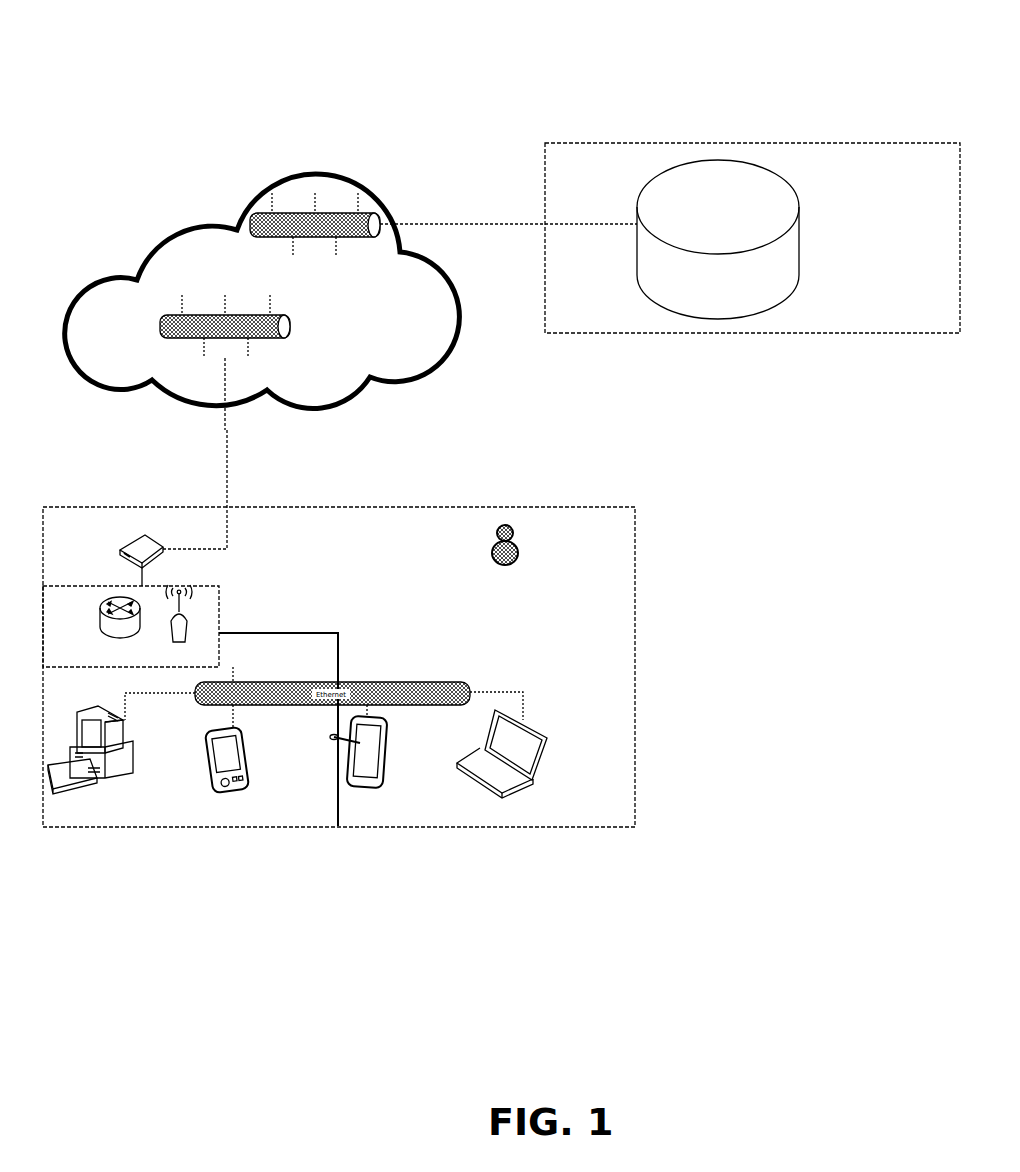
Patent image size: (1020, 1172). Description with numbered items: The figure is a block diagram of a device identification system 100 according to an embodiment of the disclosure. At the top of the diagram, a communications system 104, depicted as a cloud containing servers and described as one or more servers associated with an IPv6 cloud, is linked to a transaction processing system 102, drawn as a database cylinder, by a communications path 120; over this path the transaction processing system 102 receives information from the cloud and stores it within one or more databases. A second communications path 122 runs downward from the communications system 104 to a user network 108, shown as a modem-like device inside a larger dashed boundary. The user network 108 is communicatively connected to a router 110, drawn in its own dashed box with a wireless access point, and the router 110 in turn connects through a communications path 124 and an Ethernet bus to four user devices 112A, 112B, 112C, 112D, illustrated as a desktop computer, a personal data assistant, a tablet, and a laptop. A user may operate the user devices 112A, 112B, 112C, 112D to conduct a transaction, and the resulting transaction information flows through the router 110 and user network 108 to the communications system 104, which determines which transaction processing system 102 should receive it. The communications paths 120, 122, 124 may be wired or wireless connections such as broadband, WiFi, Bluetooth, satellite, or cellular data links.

The device identification system 100 is at (218, 98).
The transaction processing system 102 is at (688, 163).
The communications system 104 is at (338, 307).
The user network 108 is at (132, 540).
The router 110 is at (220, 614).
The user device 112A is at (92, 822).
The user device 112B is at (225, 822).
The user device 112C is at (353, 822).
The user device 112D is at (500, 822).
The communications path 120 is at (455, 225).
The communications path 122 is at (228, 463).
The communications path 124 is at (340, 643).